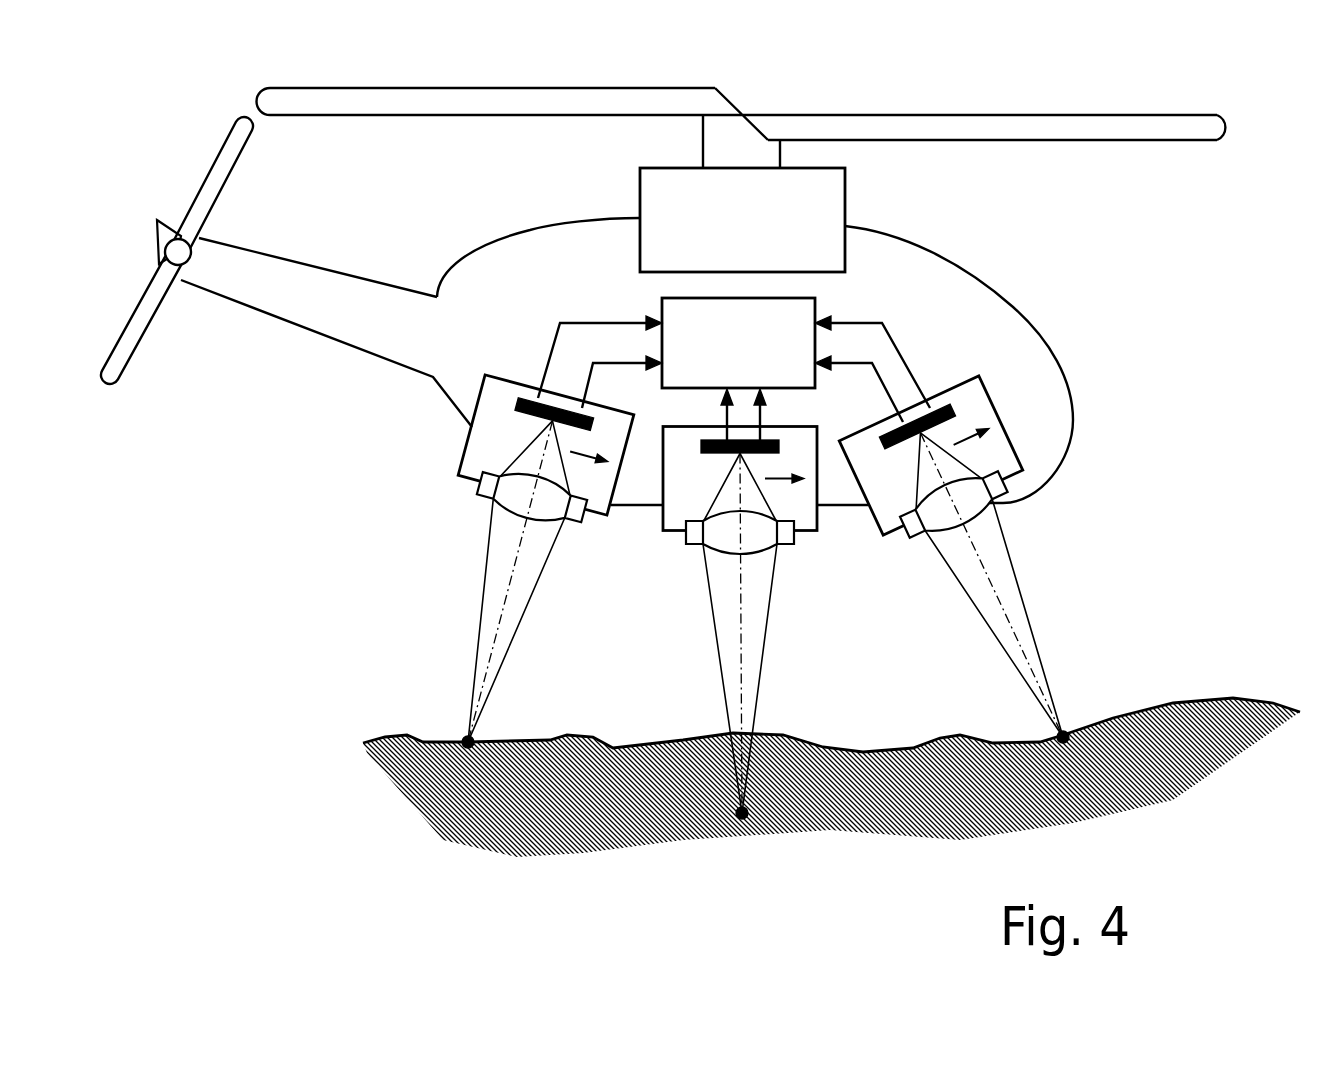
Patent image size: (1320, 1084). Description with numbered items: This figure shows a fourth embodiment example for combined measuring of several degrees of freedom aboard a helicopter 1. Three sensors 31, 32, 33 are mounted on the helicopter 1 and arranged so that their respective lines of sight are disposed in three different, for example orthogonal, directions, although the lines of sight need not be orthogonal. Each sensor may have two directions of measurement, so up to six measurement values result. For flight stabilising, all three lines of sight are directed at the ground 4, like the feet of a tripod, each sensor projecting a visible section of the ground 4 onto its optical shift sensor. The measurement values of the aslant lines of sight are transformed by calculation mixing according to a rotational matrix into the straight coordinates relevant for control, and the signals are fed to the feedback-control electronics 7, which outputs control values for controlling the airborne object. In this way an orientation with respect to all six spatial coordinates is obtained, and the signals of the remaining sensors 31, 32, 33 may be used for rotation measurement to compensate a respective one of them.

The helicopter 1 is at (887, 237).
The feedback-control electronics 7 is at (812, 310).
The sensor 31 is at (478, 427).
The sensor 32 is at (700, 453).
The sensor 33 is at (945, 405).
The ground 4 is at (650, 750).